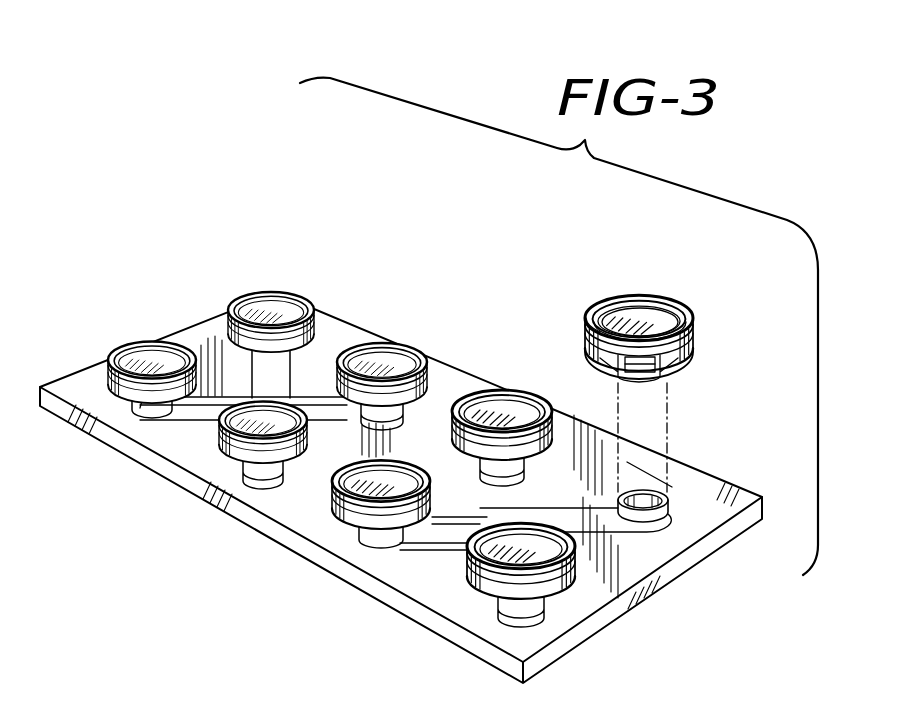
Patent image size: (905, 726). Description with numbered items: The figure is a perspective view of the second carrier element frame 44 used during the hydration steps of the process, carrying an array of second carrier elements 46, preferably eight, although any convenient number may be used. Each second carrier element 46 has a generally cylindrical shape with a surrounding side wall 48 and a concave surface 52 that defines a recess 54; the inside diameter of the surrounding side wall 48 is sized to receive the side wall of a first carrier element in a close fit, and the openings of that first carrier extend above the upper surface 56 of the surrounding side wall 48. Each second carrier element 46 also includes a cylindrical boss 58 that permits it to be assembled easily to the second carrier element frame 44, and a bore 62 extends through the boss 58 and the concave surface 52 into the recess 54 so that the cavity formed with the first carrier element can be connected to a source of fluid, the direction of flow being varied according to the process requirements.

The second carrier element frame 44 is at (450, 638).
The second carrier element 46 is at (428, 433).
The surrounding side wall 48 is at (636, 325).
The concave surface 52 is at (622, 325).
The recess 54 is at (653, 312).
The upper surface 56 is at (553, 321).
The cylindrical boss 58 is at (645, 382).
The bore 62 is at (683, 363).